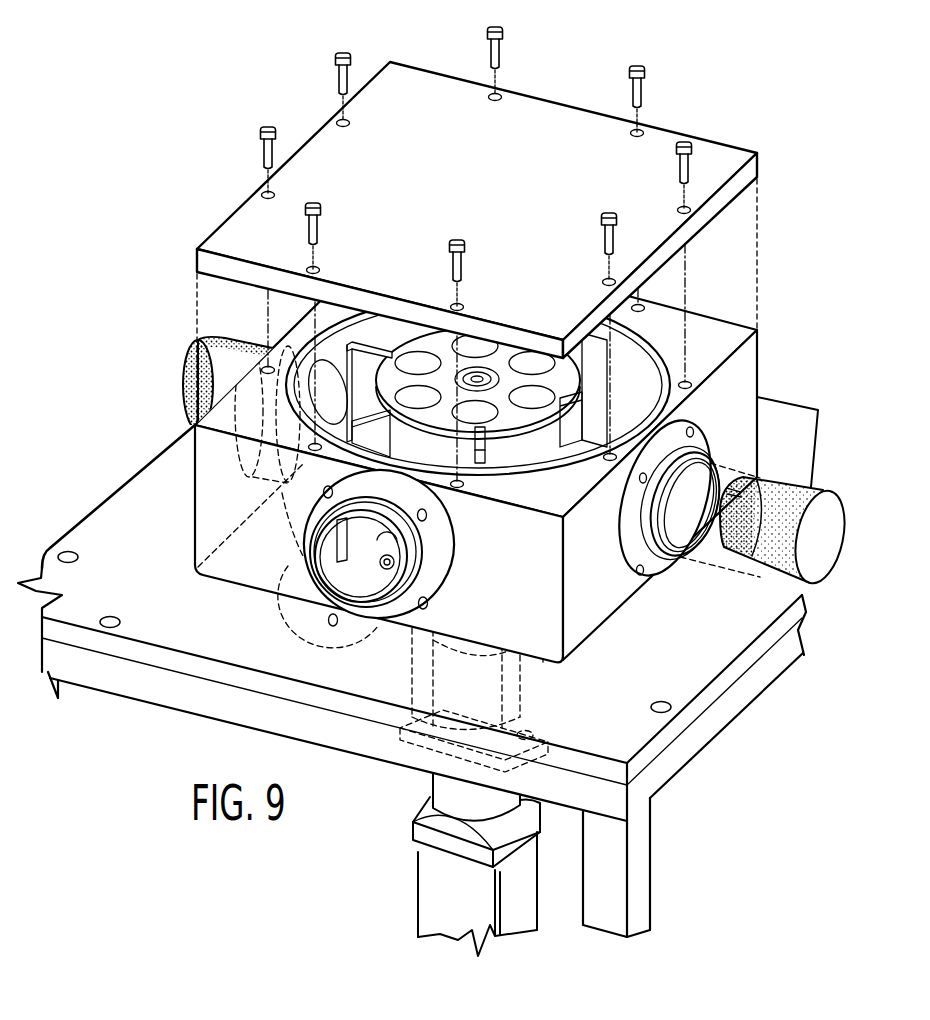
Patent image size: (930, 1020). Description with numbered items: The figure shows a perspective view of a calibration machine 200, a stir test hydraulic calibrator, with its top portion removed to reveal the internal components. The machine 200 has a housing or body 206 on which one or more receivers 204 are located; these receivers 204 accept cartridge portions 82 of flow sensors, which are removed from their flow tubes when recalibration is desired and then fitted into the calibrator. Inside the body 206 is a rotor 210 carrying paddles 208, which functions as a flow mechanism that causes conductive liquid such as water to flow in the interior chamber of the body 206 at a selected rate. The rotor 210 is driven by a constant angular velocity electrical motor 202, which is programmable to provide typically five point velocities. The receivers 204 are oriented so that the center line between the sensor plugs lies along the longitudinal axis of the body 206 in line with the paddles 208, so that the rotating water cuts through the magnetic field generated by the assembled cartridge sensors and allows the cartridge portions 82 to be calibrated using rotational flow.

The calibration machine 200 is at (777, 286).
The constant angular velocity electrical motor 202 is at (445, 881).
The receiver 204 is at (322, 510).
The body 206 is at (731, 387).
The paddles 208 is at (378, 437).
The rotor 210 is at (497, 348).
The cartridge portion 82 is at (184, 389).